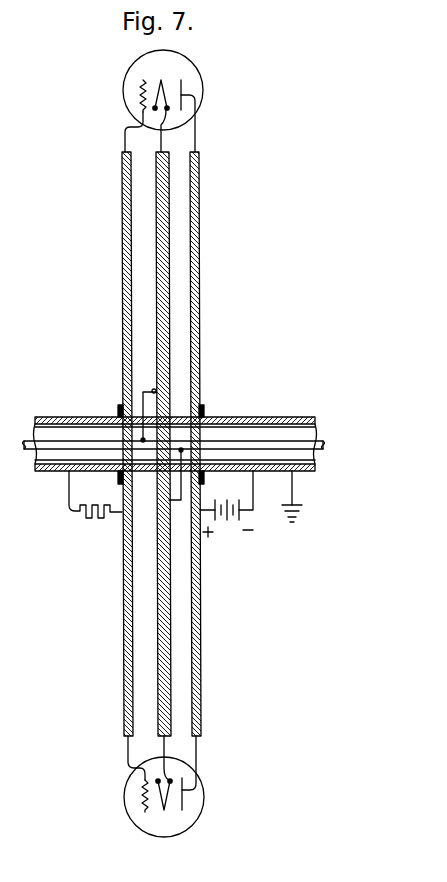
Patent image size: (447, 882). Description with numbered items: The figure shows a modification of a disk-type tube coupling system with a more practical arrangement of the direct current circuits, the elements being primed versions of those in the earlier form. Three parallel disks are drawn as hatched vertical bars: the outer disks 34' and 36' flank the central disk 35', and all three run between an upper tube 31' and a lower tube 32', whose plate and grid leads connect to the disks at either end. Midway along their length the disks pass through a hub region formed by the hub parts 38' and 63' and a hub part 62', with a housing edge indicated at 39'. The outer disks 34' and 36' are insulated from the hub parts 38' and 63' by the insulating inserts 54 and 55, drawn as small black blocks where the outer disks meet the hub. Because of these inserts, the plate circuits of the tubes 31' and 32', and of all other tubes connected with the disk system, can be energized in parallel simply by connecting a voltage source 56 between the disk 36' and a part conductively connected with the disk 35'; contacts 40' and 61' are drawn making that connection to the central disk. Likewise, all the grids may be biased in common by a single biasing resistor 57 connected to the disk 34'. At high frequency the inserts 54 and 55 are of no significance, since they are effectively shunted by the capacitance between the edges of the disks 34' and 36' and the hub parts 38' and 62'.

The tube 31' is at (149, 101).
The tube 32' is at (149, 786).
The outer disk 34' is at (115, 444).
The disk 35' is at (193, 444).
The outer disk 36' is at (210, 444).
The hub part 38' is at (175, 409).
The housing 39' is at (172, 459).
The contact wire 40' is at (124, 405).
The insulating insert 54 is at (118, 409).
The insulating insert 55 is at (204, 410).
The voltage source 56 is at (231, 500).
The biasing resistor 57 is at (93, 518).
The contact wire 61' is at (182, 489).
The hub part 62' is at (174, 420).
The hub part 63' is at (175, 431).